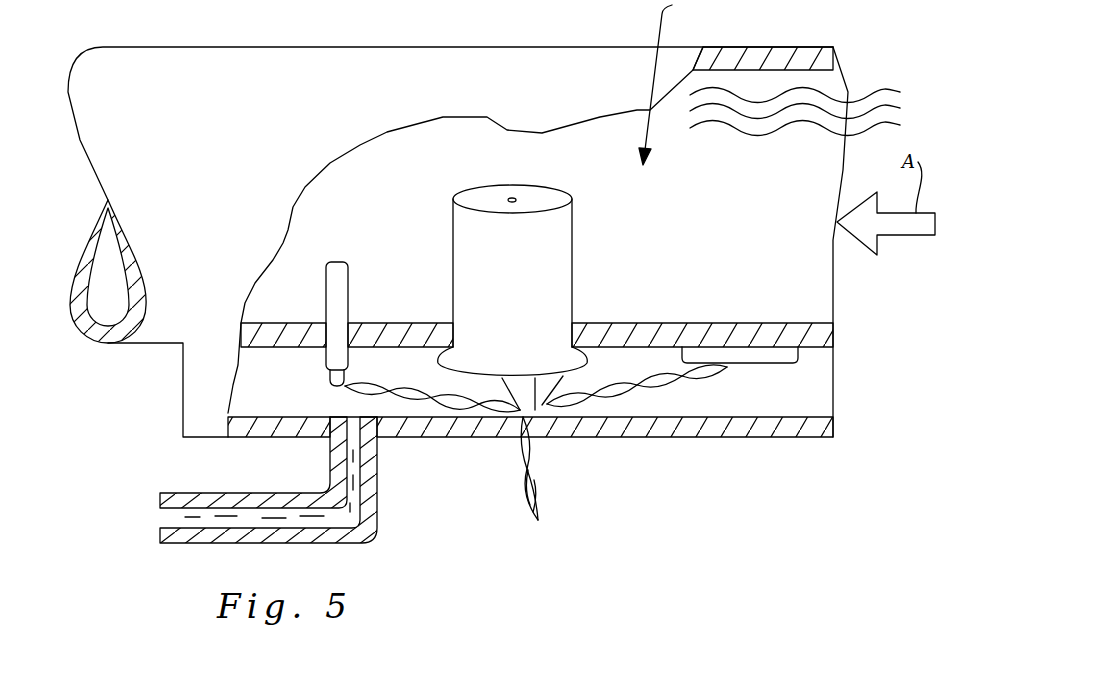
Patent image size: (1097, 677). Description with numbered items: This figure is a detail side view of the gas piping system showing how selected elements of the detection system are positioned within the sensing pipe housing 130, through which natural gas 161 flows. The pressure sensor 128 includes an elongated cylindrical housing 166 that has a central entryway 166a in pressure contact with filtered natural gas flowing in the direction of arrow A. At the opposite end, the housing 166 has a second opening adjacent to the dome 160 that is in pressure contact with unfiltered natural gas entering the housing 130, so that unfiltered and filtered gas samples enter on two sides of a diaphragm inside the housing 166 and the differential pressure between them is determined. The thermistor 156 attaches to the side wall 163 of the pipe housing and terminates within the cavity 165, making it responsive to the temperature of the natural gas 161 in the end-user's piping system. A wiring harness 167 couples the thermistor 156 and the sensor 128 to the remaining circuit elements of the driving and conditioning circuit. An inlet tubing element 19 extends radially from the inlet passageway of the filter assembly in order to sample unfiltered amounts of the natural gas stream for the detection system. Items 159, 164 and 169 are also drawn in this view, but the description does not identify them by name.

The inlet tubing element 19 is at (195, 543).
The pressure sensor 128 is at (527, 186).
The sensing pipe housing 130 is at (123, 65).
The thermistor 156 is at (760, 363).
The temperature sensor 159 is at (326, 298).
The dome 160 is at (467, 357).
The natural gas 161 is at (826, 94).
The side wall 163 is at (732, 330).
The support plate 164 is at (351, 323).
The cavity 165 is at (678, 82).
The elongated cylindrical housing 166 is at (558, 246).
The central entryway 166a is at (512, 196).
The wiring harness 167 is at (540, 453).
The housing wall 169 is at (837, 363).